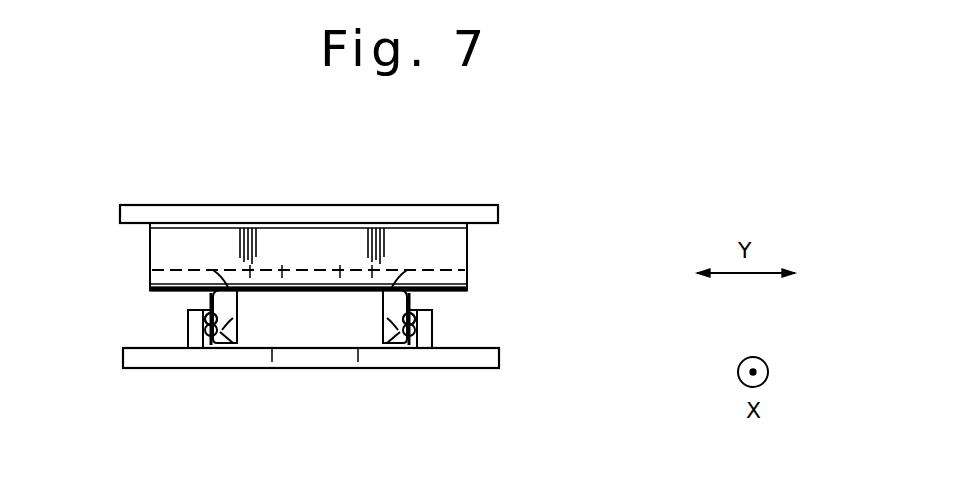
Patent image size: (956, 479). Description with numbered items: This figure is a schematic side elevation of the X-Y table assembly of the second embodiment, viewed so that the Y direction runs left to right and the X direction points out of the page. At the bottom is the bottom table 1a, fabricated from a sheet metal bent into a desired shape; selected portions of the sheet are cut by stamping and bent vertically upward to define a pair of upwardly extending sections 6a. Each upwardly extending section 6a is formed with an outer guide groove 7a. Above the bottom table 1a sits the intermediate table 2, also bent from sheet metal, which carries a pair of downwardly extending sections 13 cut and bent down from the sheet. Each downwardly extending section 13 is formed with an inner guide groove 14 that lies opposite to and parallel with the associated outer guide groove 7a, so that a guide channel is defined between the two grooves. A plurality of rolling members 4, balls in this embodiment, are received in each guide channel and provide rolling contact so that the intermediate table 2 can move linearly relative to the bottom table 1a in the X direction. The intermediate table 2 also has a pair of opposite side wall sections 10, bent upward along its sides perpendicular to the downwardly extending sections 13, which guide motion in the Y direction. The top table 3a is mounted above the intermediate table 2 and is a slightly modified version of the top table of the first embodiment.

The top table 3a is at (331, 205).
The intermediate table 2 is at (452, 244).
The side wall sections 10 is at (150, 248).
The downwardly extending sections 13 is at (237, 308).
The inner guide groove 14 is at (205, 317).
The upwardly extending sections 6a is at (190, 339).
The rolling members 4 is at (204, 338).
The outer guide groove 7a is at (224, 334).
The bottom table 1a is at (486, 360).